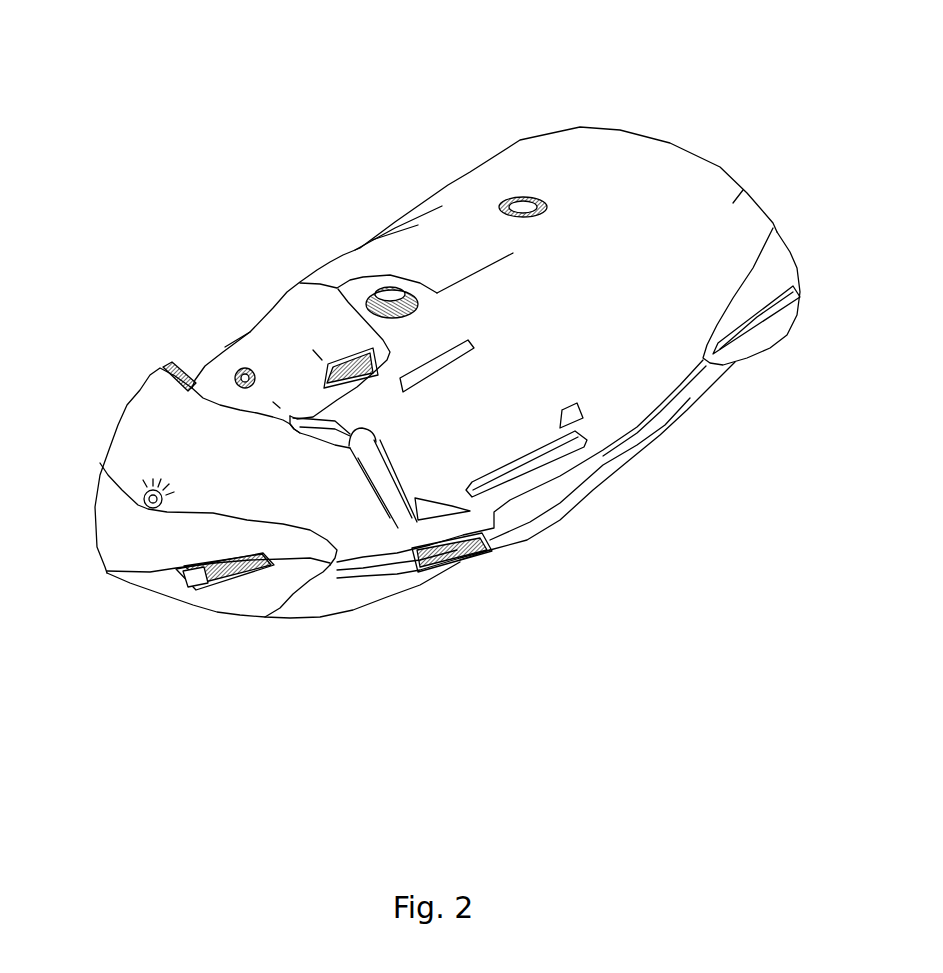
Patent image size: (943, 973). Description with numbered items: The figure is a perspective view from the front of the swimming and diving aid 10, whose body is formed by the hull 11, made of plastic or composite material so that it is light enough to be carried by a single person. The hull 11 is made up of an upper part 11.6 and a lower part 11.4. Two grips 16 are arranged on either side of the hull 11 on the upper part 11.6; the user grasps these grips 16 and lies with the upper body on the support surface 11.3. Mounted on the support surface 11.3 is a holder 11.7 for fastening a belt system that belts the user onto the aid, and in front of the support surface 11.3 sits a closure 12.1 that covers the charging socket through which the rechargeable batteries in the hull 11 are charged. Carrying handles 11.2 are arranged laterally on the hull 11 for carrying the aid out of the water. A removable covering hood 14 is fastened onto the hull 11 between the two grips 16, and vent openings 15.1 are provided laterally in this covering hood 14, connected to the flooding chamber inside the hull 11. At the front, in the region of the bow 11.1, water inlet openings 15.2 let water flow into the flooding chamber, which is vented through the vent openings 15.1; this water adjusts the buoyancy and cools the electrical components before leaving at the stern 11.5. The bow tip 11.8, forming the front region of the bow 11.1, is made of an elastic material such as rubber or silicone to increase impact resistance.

The swimming and diving aid 10 is at (242, 223).
The hull 11 is at (386, 410).
The bow 11.1 is at (246, 659).
The carrying handles 11.2 is at (528, 552).
The support surface 11.3 is at (434, 205).
The lower part 11.4 is at (521, 530).
The stern 11.5 is at (770, 191).
The upper part 11.6 is at (501, 204).
The holder 11.7 is at (491, 154).
The bow tip 11.8 is at (218, 582).
The closure 12.1 is at (368, 232).
The covering hood 14 is at (333, 325).
The vent openings 15.1 is at (331, 280).
The water inlet openings 15.2 is at (226, 627).
The grips 16 is at (420, 564).